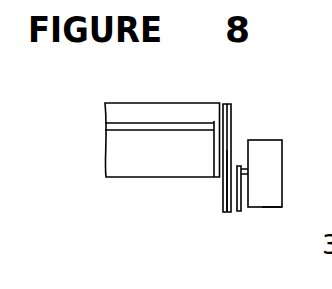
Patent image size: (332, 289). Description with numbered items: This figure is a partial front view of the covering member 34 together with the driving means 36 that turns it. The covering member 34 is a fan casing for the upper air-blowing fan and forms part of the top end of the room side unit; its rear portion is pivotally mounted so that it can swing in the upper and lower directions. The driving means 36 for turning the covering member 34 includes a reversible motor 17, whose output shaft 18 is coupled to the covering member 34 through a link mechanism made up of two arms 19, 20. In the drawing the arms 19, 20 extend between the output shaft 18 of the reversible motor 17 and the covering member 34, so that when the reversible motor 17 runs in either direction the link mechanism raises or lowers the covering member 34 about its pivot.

The covering member 34 is at (167, 93).
The output shaft 18 is at (242, 155).
The arm 20 is at (227, 188).
The arm 19 is at (238, 212).
The driving means 36 is at (270, 138).
The reversible motor 17 is at (265, 208).